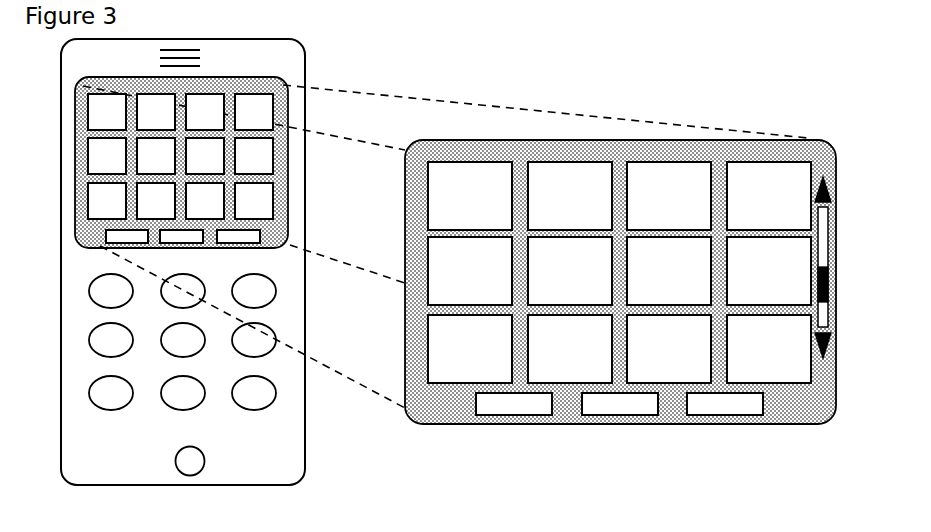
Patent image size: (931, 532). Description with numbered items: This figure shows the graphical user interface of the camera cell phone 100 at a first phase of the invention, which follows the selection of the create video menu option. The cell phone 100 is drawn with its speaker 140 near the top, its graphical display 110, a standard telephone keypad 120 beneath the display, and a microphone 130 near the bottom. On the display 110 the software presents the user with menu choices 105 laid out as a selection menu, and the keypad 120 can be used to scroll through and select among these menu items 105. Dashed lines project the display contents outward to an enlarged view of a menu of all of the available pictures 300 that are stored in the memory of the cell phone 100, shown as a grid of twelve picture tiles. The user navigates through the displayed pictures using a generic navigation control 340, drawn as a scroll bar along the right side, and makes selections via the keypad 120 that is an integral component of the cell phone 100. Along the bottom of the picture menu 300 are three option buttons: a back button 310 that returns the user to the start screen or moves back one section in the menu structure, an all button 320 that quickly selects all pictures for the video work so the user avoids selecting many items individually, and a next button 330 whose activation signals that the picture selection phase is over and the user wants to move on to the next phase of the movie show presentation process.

The cell phone 100 is at (292, 37).
The menu choices 105 is at (82, 133).
The cell phone display 110 is at (290, 206).
The telephone keypad 120 is at (313, 273).
The microphone 130 is at (188, 476).
The speaker 140 is at (173, 38).
The menu of available pictures 300 is at (812, 155).
The back button 310 is at (500, 417).
The all button 320 is at (605, 417).
The next button 330 is at (725, 417).
The navigation control 340 is at (828, 255).